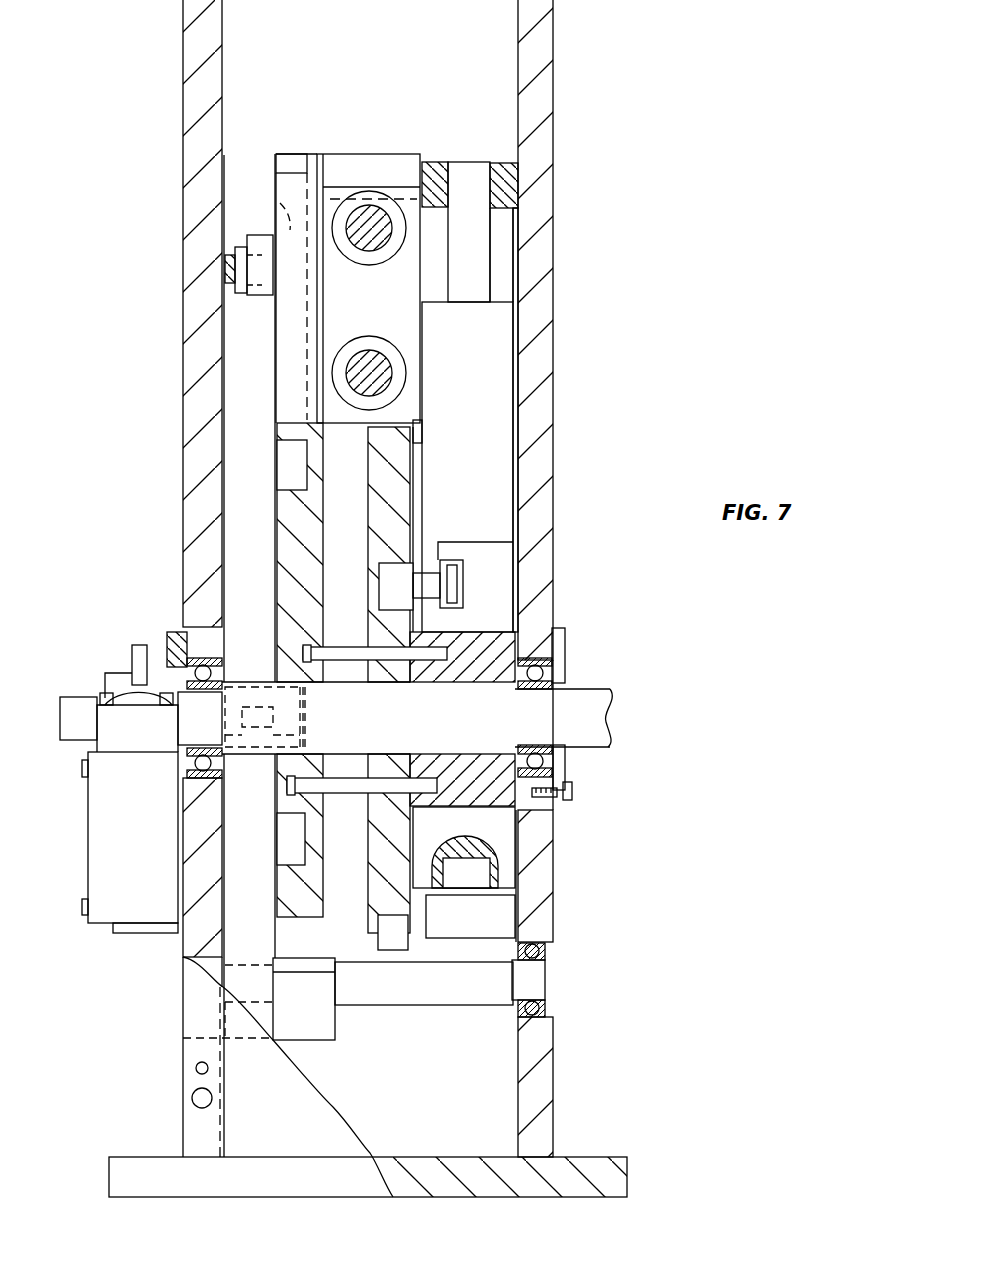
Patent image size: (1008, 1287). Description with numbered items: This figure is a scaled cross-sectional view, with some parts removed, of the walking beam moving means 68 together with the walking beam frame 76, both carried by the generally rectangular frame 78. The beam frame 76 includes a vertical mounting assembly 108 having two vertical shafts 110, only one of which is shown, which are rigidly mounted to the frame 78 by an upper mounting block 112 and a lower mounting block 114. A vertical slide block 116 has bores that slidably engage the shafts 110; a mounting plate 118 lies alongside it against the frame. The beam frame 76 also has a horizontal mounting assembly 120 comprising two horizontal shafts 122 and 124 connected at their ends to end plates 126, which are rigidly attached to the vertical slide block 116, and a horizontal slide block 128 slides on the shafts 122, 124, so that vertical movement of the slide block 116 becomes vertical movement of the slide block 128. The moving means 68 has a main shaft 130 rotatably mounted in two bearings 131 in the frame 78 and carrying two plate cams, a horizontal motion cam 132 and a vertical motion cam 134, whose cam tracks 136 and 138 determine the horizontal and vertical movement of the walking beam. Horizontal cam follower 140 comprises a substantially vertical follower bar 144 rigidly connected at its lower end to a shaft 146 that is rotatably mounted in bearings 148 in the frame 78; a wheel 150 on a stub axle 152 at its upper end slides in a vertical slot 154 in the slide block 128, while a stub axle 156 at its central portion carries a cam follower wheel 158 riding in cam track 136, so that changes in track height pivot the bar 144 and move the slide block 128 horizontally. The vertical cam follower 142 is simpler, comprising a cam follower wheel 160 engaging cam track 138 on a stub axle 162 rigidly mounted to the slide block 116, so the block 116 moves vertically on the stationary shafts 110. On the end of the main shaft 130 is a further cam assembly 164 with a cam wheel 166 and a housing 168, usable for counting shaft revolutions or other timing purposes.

The walking beam moving means 68 is at (565, 290).
The interconnecting beam frame 76 is at (303, 152).
The frame 78 is at (556, 108).
The vertical mounting assembly 108 is at (457, 158).
The vertical shaft 110 is at (495, 240).
The upper mounting block 112 is at (518, 166).
The lower mounting block 114 is at (454, 928).
The vertical slide block 116 is at (516, 300).
The mounting plate 118 is at (520, 905).
The horizontal mounting assembly 120 is at (425, 303).
The horizontal shaft 122 is at (365, 252).
The horizontal shaft 124 is at (392, 352).
The end plate 126 is at (433, 162).
The horizontal slide block 128 is at (345, 154).
The main shaft 130 is at (600, 748).
The bearing 131 is at (185, 635).
The horizontal motion cam 132 is at (285, 545).
The vertical motion cam 134 is at (414, 500).
The cam track 136 is at (292, 458).
The cam track 138 is at (382, 565).
The horizontal cam follower 140 is at (225, 780).
The vertical cam follower 142 is at (468, 573).
The follower bar 144 is at (228, 395).
The shaft 146 is at (412, 1008).
The bearing 148 is at (548, 955).
The wheel 150 is at (280, 228).
The stub axle 152 is at (255, 297).
The vertical slot 154 is at (276, 190).
The stub axle 156 is at (262, 690).
The cam follower wheel 158 is at (307, 740).
The cam follower wheel 160 is at (400, 560).
The stub axle 162 is at (452, 570).
The cam assembly 164 is at (95, 676).
The cam wheel 166 is at (140, 648).
The housing 168 is at (90, 870).